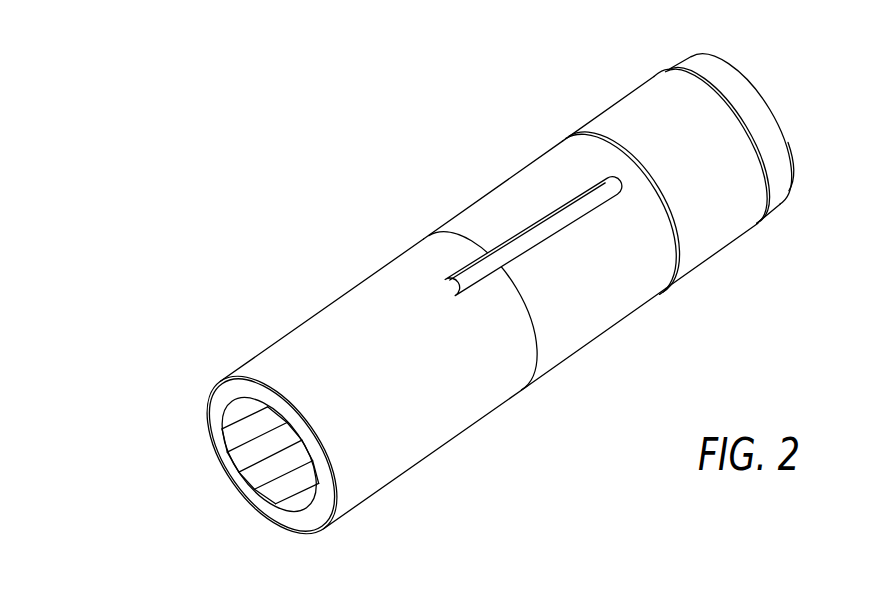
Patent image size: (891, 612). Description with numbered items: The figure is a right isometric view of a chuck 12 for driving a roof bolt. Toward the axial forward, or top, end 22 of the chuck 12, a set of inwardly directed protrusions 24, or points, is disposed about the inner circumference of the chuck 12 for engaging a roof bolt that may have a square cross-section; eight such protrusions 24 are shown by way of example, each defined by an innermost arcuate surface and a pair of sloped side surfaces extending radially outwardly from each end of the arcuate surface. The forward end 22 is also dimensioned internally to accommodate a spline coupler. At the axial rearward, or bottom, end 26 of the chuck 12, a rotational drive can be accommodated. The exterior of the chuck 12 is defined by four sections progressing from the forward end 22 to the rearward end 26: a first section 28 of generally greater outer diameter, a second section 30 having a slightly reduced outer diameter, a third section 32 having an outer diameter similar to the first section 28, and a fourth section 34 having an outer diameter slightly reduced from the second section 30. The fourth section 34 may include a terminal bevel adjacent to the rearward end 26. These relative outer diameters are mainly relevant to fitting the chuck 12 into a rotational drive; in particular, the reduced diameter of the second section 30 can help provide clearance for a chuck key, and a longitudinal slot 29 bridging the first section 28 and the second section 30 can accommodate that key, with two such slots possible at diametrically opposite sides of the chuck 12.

The chuck 12 is at (352, 147).
The forward end 22 is at (225, 397).
The inwardly directed protrusions 24 is at (257, 485).
The rearward end 26 is at (742, 78).
The first section 28 is at (425, 428).
The longitudinal slot 29 is at (545, 232).
The second section 30 is at (540, 173).
The third section 32 is at (642, 100).
The fourth section 34 is at (772, 143).